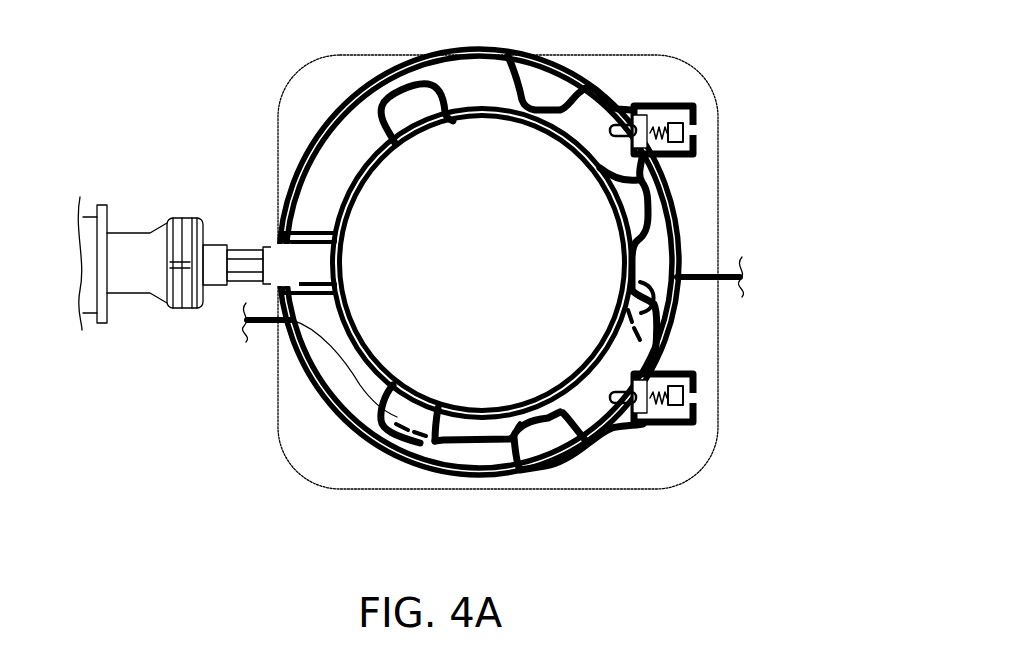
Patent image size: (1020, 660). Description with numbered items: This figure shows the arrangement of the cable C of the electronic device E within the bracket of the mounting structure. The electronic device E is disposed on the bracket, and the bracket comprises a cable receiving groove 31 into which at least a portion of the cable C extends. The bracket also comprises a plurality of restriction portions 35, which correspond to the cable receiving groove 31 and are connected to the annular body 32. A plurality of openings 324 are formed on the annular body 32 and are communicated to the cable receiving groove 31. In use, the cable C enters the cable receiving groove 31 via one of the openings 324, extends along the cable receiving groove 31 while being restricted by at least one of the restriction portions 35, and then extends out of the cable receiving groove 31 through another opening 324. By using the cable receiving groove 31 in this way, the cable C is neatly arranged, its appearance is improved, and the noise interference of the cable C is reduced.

The electronic device E is at (671, 73).
The cable receiving groove 31 is at (360, 410).
The annular body 32 is at (587, 447).
The restriction portions 35 is at (410, 437).
The openings 324 is at (303, 360).
The cable C is at (477, 443).